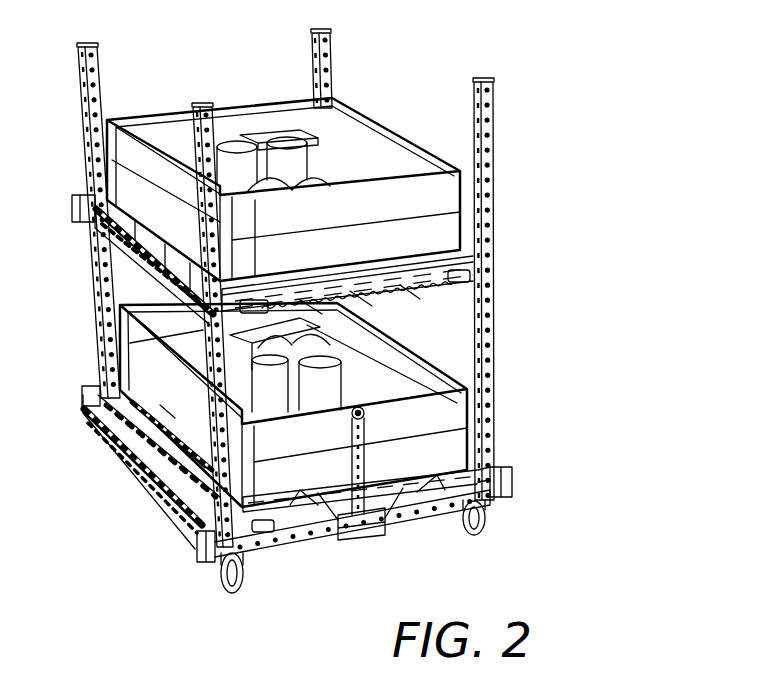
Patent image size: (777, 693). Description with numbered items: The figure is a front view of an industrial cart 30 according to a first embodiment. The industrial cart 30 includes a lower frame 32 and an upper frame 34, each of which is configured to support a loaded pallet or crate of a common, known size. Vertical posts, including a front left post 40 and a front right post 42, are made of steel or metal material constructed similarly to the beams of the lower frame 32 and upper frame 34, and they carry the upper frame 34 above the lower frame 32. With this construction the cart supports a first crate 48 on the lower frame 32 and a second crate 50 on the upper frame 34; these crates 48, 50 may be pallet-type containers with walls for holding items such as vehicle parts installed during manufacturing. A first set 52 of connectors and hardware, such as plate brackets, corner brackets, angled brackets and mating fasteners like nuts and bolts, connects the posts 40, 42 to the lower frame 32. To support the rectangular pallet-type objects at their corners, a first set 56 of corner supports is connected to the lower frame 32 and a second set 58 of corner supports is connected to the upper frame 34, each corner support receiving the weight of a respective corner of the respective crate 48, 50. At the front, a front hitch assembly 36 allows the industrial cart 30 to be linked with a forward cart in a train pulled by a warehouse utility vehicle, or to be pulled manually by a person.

The industrial cart 30 is at (569, 225).
The lower frame 32 is at (316, 556).
The upper frame 34 is at (332, 318).
The front hitch assembly 36 is at (362, 530).
The front left post 40 is at (494, 372).
The front right post 42 is at (106, 446).
The first crate 48 is at (420, 432).
The second crate 50 is at (392, 212).
The first set of connectors and hardware 52 is at (512, 484).
The first set of corner supports 56 is at (483, 501).
The second set of corner supports 58 is at (250, 300).